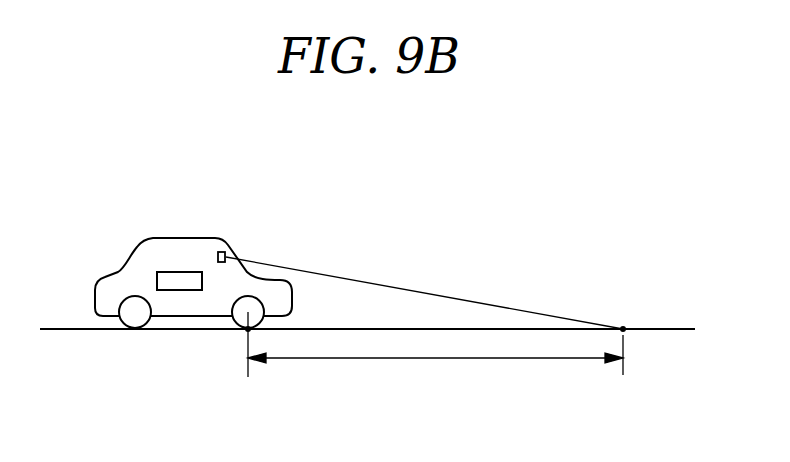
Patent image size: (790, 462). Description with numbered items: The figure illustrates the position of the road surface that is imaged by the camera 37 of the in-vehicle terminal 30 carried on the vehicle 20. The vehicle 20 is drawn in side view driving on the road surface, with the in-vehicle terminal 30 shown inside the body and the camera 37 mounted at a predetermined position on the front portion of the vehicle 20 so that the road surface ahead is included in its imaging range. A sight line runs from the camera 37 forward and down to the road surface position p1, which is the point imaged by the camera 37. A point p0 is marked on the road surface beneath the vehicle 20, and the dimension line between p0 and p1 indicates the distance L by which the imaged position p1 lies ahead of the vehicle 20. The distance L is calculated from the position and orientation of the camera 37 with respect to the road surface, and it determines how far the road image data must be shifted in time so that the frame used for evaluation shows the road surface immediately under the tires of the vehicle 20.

The vehicle 20 is at (175, 238).
The in-vehicle terminal 30 is at (190, 291).
The camera 37 is at (223, 251).
The vehicle reference position p0 is at (246, 331).
The position of the road surface imaged by the camera p1 is at (625, 327).
The distance L is at (435, 348).